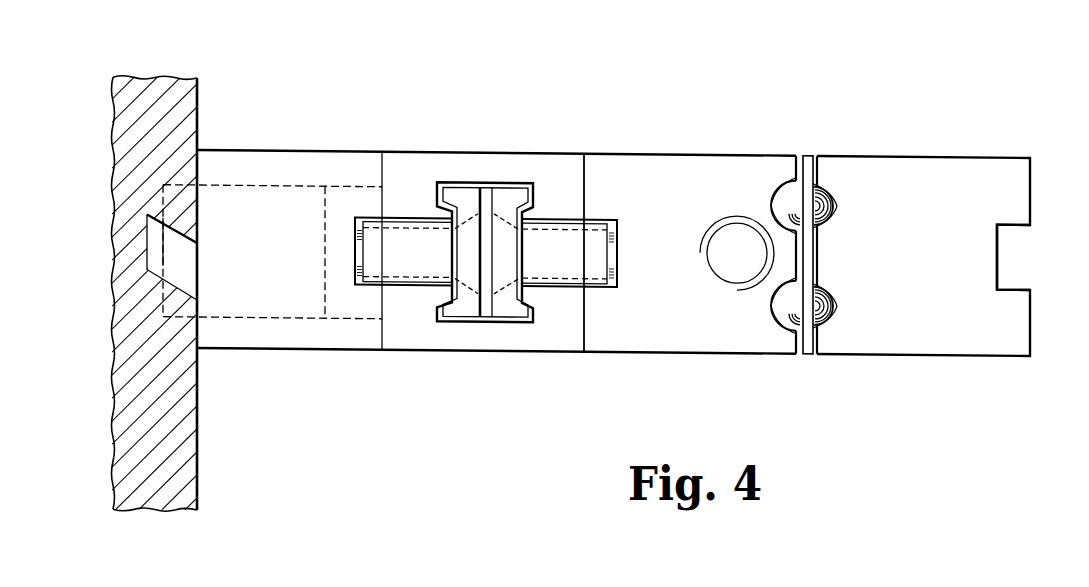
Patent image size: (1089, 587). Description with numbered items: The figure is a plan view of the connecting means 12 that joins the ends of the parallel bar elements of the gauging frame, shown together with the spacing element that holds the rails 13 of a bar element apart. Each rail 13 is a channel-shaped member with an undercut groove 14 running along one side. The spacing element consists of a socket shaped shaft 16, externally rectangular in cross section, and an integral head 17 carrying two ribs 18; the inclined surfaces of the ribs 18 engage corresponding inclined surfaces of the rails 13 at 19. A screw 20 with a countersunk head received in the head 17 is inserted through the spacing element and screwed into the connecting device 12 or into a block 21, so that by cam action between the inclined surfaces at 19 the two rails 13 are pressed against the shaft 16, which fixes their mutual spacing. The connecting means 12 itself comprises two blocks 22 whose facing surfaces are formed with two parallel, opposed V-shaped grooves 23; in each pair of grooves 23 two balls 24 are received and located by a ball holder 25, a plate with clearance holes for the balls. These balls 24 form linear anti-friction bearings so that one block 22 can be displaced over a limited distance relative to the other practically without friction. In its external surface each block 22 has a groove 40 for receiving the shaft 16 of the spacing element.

The connecting device 12 is at (713, 142).
The rails 13 is at (416, 156).
The undercut groove 14 is at (485, 317).
The socket shaped shaft 16 is at (558, 272).
The head 17 is at (507, 312).
The ribs 18 is at (517, 192).
The inclined surfaces 19 is at (533, 202).
The screw 20 is at (618, 261).
The block 21 is at (296, 341).
The blocks 22 is at (770, 157).
The V-shaped grooves 23 is at (838, 202).
The balls 24 is at (787, 304).
The ball holder 25 is at (808, 247).
The groove 40 is at (1007, 247).